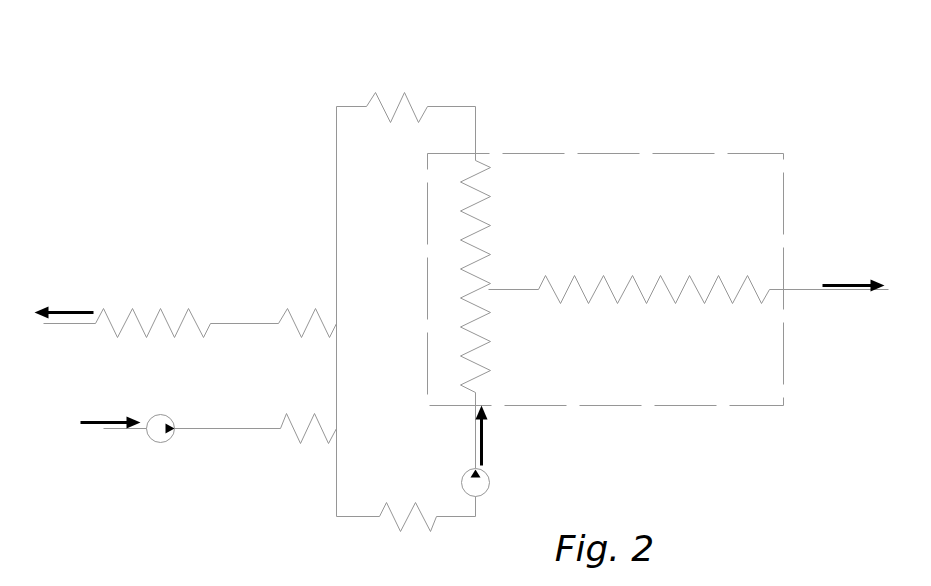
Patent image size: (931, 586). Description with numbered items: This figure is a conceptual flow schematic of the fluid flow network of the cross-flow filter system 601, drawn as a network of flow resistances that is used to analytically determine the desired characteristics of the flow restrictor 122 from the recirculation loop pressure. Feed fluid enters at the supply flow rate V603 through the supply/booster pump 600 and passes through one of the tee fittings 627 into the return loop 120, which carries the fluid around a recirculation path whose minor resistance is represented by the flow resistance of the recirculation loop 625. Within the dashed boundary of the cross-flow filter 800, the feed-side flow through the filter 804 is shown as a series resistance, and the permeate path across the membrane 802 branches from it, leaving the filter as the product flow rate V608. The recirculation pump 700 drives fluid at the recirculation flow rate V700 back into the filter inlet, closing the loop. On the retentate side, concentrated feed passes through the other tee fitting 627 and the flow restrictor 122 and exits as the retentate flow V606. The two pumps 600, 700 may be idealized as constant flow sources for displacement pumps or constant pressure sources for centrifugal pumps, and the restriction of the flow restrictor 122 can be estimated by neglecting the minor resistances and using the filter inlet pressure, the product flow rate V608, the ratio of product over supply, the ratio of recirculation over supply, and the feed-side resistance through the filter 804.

The cross-flow filter system 601 is at (583, 80).
The return loop 120 is at (336, 168).
The flow resistance of the recirculation loop 625 is at (393, 97).
The cross-flow filter 800 is at (606, 280).
The flow through the filter 804 is at (483, 237).
The membrane 802 is at (672, 277).
The flow restrictor 122 is at (173, 315).
The tee fittings 627 is at (308, 307).
The supply/booster pump 600 is at (139, 439).
The recirculation pump 700 is at (492, 483).
The retentate flow V606 is at (64, 306).
The supply flow rate V603 is at (111, 416).
The product flow rate V608 is at (854, 279).
The recirculation flow rate V700 is at (499, 436).